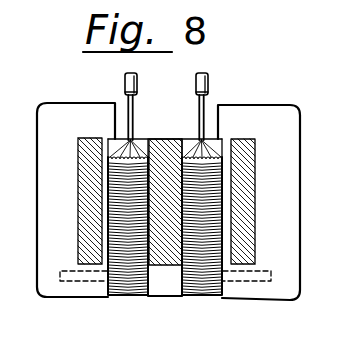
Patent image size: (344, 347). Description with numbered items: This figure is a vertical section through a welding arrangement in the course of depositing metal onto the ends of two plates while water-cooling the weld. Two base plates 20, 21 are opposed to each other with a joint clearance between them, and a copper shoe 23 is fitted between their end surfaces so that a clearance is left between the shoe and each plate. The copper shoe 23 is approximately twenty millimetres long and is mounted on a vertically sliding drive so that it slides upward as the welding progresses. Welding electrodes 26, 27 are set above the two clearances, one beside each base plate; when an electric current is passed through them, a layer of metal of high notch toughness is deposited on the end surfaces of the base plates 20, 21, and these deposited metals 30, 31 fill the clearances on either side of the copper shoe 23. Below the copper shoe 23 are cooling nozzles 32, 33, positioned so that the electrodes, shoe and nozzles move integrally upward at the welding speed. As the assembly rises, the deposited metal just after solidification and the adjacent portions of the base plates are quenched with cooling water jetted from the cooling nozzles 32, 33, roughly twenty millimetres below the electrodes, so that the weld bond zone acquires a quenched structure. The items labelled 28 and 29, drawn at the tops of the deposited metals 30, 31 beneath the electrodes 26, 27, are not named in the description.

The base plate 20 is at (63, 117).
The base plate 21 is at (261, 115).
The copper shoe 23 is at (167, 258).
The welding electrode 26 is at (137, 85).
The welding electrode 27 is at (208, 80).
The left coil bobbin 28 is at (140, 156).
The right coil bobbin 29 is at (191, 148).
The deposited metal 30 is at (125, 291).
The deposited metal 31 is at (196, 289).
The cooling nozzle 32 is at (82, 277).
The cooling nozzle 33 is at (244, 279).